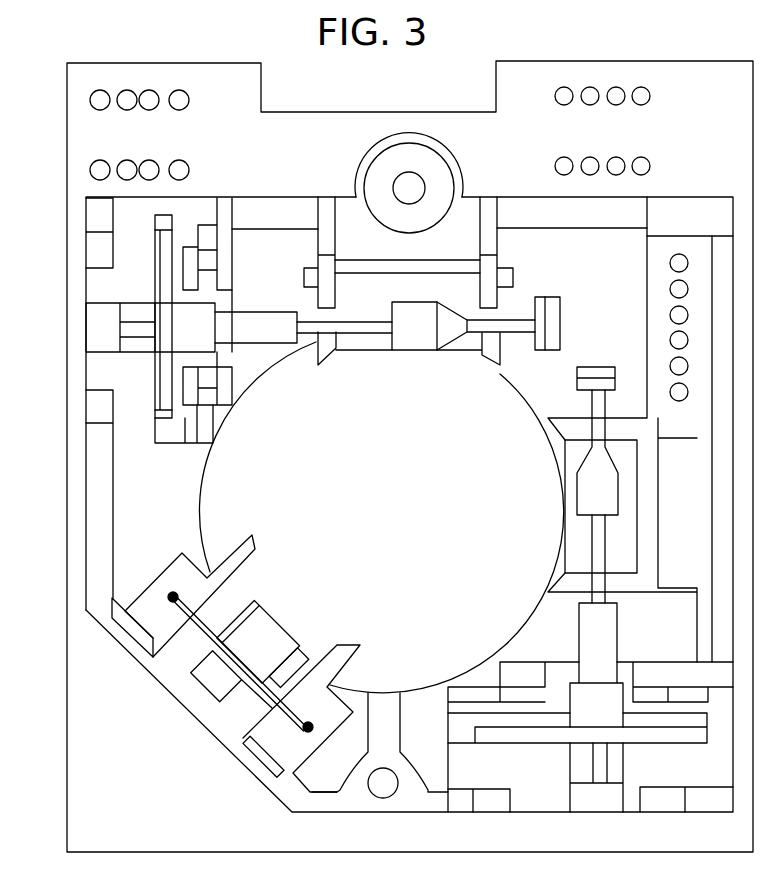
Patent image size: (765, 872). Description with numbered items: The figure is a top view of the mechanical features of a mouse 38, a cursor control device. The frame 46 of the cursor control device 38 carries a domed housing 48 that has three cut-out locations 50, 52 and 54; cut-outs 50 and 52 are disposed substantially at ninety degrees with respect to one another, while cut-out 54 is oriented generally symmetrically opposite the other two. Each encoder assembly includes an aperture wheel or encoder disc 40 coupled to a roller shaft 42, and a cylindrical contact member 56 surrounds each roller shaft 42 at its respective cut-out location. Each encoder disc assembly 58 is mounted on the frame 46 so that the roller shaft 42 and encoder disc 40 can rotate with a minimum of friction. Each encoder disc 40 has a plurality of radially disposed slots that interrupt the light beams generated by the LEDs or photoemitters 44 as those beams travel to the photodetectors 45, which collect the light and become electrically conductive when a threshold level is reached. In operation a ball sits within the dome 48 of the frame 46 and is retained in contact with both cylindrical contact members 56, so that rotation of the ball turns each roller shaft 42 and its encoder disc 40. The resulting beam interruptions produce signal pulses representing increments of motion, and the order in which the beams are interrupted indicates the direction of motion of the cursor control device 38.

The mouse 38 is at (56, 590).
The encoder disc 40 is at (172, 232).
The roller shaft 42 is at (523, 310).
The photoemitters 44 is at (214, 227).
The photodetectors 45 is at (92, 249).
The frame 46 is at (125, 508).
The domed housing 48 is at (345, 513).
The cut-out location 50 is at (455, 352).
The cut-out location 52 is at (565, 488).
The cut-out location 54 is at (277, 622).
The cylindrical contact member 56 is at (618, 490).
The encoder disc assembly 58 is at (606, 545).